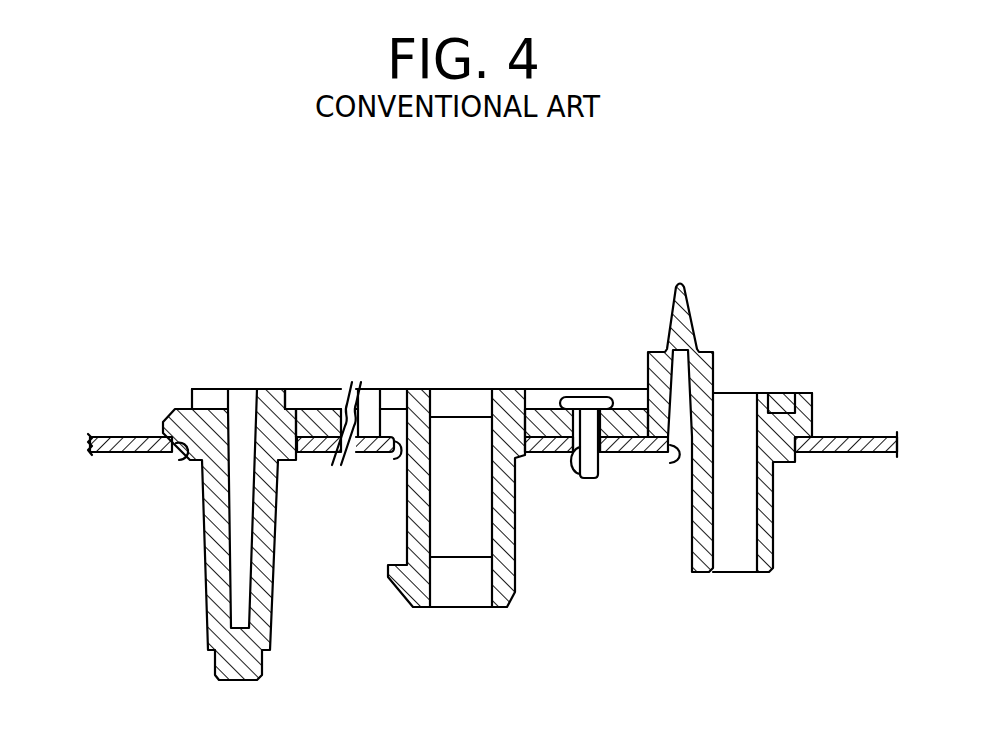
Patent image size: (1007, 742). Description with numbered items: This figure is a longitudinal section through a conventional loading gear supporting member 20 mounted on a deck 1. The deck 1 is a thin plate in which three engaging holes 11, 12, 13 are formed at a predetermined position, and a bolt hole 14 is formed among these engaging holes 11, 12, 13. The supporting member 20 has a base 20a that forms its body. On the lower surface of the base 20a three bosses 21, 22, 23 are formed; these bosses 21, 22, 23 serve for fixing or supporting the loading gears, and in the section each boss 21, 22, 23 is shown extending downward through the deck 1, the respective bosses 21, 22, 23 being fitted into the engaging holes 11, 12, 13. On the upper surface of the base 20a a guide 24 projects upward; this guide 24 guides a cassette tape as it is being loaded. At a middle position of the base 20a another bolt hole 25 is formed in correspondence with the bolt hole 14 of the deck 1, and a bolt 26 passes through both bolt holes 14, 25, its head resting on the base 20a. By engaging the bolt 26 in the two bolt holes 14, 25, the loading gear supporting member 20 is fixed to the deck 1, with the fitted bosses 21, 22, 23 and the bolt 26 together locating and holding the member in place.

The deck 1 is at (867, 445).
The engaging hole 11 is at (400, 458).
The engaging hole 12 is at (676, 458).
The engaging hole 13 is at (187, 463).
The bolt hole 14 is at (577, 478).
The loading gear supporting member 20 is at (148, 356).
The base 20a is at (305, 398).
The boss 21 is at (462, 592).
The boss 22 is at (765, 532).
The boss 23 is at (258, 627).
The guide 24 is at (686, 300).
The bolt hole 25 is at (584, 406).
The bolt 26 is at (575, 404).